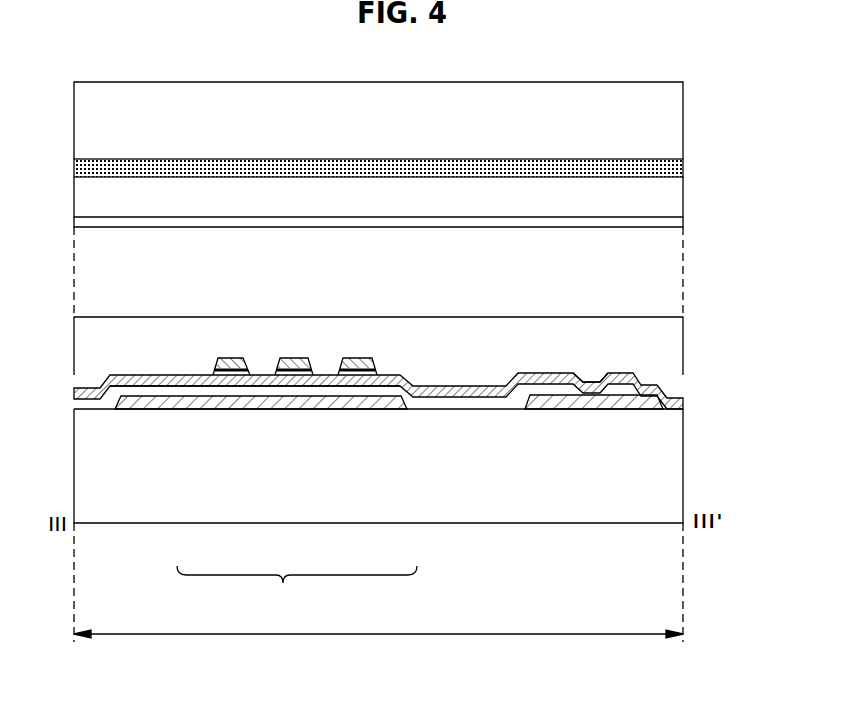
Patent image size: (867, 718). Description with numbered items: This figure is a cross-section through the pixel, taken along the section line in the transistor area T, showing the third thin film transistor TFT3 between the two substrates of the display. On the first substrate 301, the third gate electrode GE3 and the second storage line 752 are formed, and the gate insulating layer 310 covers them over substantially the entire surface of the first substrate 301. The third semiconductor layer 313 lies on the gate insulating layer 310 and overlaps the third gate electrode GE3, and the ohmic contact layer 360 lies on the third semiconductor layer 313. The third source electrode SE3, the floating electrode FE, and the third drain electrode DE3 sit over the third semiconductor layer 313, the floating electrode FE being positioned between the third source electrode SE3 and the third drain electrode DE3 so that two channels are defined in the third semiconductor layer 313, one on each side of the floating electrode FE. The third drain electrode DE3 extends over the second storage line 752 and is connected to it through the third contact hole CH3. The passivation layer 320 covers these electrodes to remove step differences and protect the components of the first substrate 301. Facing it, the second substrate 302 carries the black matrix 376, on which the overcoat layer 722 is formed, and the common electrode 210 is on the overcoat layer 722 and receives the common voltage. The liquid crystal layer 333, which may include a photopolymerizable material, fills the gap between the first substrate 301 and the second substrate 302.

The second substrate 302 is at (670, 121).
The black matrix 376 is at (670, 166).
The overcoat layer 722 is at (670, 195).
The common electrode 210 is at (670, 222).
The liquid crystal layer 333 is at (670, 270).
The passivation layer 320 is at (670, 358).
The gate insulating layer 310 is at (668, 404).
The first substrate 301 is at (670, 465).
The third gate electrode GE3 is at (228, 400).
The second storage line 752 is at (597, 402).
The third semiconductor layer 313 is at (283, 384).
The third contact hole CH3 is at (585, 380).
The third source electrode SE3 is at (243, 363).
The floating electrode FE is at (293, 372).
The third drain electrode DE3 is at (349, 359).
The ohmic contact layer 360 is at (347, 372).
The third thin film transistor TFT3 is at (297, 590).
The transistor area T is at (378, 648).